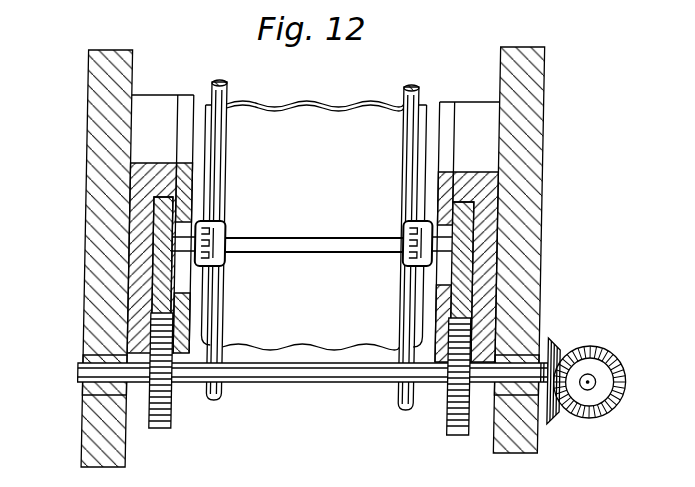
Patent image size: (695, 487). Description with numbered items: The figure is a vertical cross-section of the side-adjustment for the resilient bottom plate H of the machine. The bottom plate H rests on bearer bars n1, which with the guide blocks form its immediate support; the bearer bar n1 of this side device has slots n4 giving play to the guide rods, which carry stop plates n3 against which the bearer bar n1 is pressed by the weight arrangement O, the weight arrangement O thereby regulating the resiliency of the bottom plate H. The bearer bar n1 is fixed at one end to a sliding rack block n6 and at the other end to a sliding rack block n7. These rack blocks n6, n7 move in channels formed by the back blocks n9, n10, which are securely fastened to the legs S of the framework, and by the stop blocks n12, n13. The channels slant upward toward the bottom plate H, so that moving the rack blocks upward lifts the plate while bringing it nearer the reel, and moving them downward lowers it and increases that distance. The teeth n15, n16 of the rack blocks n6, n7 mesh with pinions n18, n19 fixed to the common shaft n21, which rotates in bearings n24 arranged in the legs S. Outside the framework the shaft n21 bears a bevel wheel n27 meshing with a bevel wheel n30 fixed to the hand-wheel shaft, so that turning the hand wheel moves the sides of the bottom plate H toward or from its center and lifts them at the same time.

The leg of the framework S is at (95, 252).
The bearing n24 is at (92, 385).
The back block n9 is at (134, 214).
The back block n10 is at (492, 195).
The stop block n12 is at (190, 183).
The stop block n13 is at (440, 195).
The sliding rack block n6 is at (165, 286).
The sliding rack block n7 is at (462, 287).
The bottom plate H is at (343, 102).
The weight arrangement O is at (216, 82).
The teeth of rack block n15 is at (205, 303).
The teeth of rack block n16 is at (425, 312).
The stop plate n3 is at (224, 229).
The slot n4 is at (224, 262).
The bearer bar n1 is at (305, 240).
The common shaft n21 is at (320, 384).
The pinion n18 is at (176, 418).
The pinion n19 is at (452, 426).
The bevel wheel n27 is at (556, 416).
The bevel wheel n30 is at (628, 392).